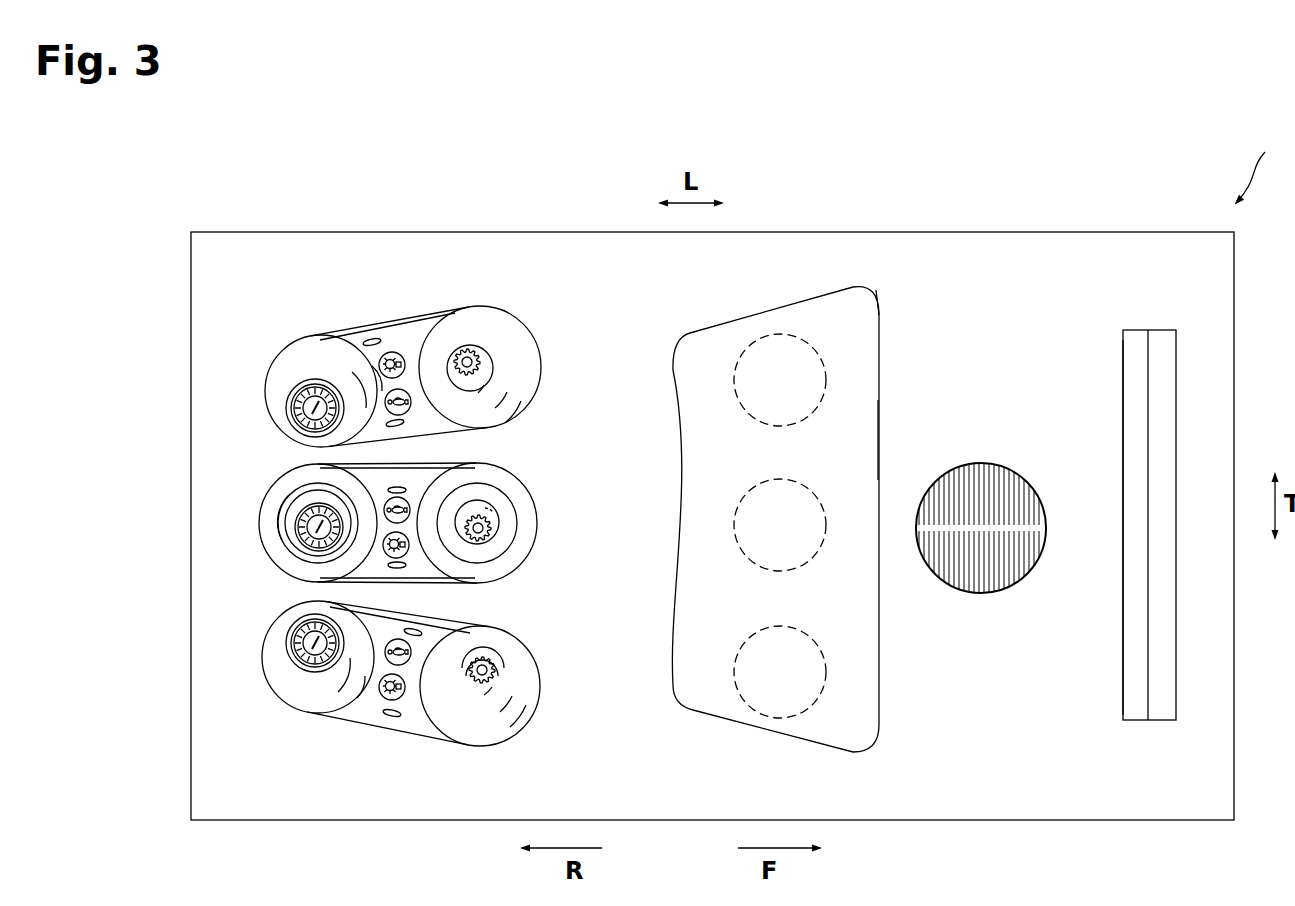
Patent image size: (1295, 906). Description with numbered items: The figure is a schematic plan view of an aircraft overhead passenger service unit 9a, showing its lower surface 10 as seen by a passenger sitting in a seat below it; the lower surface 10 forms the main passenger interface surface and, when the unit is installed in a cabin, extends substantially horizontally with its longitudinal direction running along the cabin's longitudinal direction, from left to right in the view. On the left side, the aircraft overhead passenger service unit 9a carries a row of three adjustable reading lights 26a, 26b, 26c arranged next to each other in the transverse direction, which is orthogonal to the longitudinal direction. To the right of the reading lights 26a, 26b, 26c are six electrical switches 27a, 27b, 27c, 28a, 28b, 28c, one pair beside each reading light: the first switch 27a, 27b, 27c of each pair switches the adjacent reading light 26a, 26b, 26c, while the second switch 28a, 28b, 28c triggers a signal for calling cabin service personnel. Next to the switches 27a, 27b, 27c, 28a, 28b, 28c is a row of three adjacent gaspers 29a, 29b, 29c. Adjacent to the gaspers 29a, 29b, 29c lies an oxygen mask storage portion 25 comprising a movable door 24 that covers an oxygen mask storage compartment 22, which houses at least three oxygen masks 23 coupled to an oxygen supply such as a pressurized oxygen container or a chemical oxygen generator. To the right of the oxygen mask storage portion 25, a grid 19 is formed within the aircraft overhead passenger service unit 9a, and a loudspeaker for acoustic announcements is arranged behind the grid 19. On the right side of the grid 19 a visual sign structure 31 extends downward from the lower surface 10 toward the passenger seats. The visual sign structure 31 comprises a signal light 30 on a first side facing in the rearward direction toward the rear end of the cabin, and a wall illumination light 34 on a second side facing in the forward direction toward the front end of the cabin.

The aircraft overhead passenger service unit 9a is at (1257, 164).
The lower surface 10 is at (1028, 792).
The grid 19 is at (1000, 447).
The oxygen mask storage compartment 22 is at (853, 268).
The oxygen masks 23 is at (794, 393).
The movable door 24 is at (845, 436).
The oxygen mask storage portion 25 is at (893, 305).
The adjustable reading light 26a is at (302, 374).
The adjustable reading light 26b is at (298, 546).
The adjustable reading light 26c is at (305, 673).
The electrical switch 27a is at (389, 352).
The electrical switch 27b is at (412, 556).
The electrical switch 27c is at (380, 700).
The electrical switch 28a is at (404, 390).
The electrical switch 28b is at (411, 500).
The electrical switch 28c is at (405, 668).
The gasper 29a is at (488, 352).
The gasper 29b is at (498, 541).
The gasper 29c is at (482, 683).
The signal light 30 is at (1133, 708).
The visual sign structure 31 is at (1146, 320).
The wall illumination light 34 is at (1162, 705).